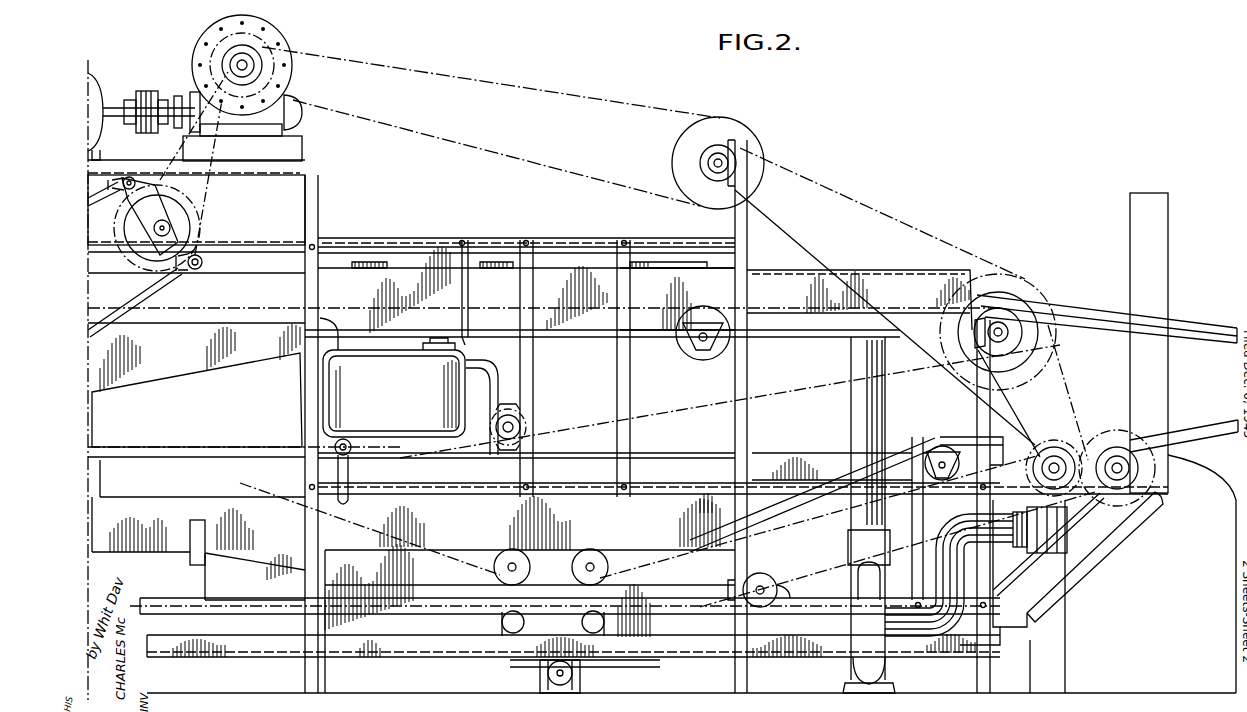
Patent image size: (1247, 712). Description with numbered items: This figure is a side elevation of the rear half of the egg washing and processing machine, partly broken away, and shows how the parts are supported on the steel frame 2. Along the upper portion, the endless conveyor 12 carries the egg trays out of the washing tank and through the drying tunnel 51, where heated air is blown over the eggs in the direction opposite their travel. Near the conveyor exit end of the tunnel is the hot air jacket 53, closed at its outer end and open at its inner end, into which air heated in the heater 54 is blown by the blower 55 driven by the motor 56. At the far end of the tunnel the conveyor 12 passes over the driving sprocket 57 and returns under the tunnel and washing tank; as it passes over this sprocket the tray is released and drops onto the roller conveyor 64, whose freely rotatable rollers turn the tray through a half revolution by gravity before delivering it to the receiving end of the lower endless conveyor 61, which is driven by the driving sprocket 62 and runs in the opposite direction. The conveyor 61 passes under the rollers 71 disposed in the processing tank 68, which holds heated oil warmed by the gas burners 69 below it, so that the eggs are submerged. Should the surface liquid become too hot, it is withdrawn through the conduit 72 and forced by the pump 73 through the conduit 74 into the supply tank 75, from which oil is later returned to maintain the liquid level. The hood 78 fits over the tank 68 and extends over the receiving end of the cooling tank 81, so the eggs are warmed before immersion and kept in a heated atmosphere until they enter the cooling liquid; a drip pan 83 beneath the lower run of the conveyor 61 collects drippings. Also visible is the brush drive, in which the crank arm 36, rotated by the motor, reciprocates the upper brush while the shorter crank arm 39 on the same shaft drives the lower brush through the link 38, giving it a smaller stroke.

The frame 2 is at (439, 246).
The endless conveyor 12 is at (899, 372).
The crank arm 36 is at (150, 210).
The link 38 is at (152, 294).
The crank arm 39 is at (197, 243).
The tunnel 51 is at (237, 299).
The hot air jacket 53 is at (770, 273).
The heater 54 is at (1148, 594).
The blower 55 is at (866, 578).
The motor 56 is at (778, 590).
The driving sprocket 57 is at (1012, 320).
The endless conveyor 61 is at (1030, 448).
The driving sprocket 62 is at (1110, 452).
The roller conveyor 64 is at (1087, 315).
The processing tank 68 is at (290, 570).
The gas burners 69 is at (582, 622).
The rollers 71 is at (506, 562).
The conduit 72 is at (630, 662).
The pump 73 is at (576, 678).
The conduit 74 is at (478, 363).
The supply tank 75 is at (372, 392).
The hood 78 is at (765, 458).
The cooling tank 81 is at (163, 547).
The drip pan 83 is at (912, 650).